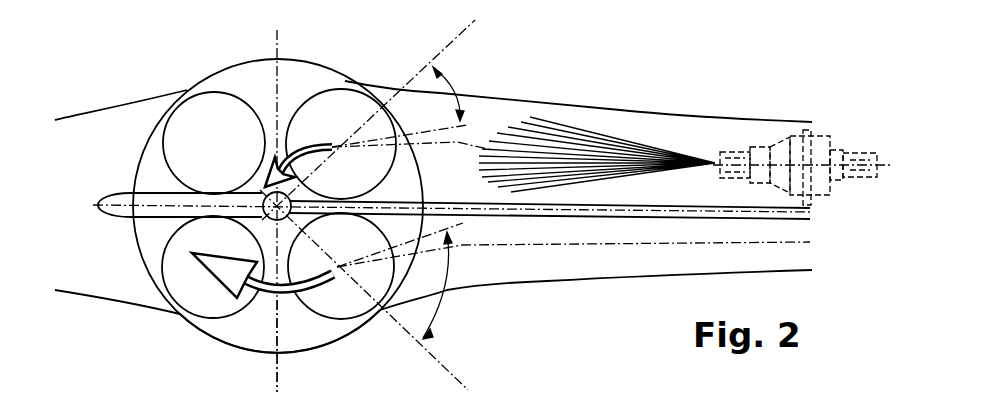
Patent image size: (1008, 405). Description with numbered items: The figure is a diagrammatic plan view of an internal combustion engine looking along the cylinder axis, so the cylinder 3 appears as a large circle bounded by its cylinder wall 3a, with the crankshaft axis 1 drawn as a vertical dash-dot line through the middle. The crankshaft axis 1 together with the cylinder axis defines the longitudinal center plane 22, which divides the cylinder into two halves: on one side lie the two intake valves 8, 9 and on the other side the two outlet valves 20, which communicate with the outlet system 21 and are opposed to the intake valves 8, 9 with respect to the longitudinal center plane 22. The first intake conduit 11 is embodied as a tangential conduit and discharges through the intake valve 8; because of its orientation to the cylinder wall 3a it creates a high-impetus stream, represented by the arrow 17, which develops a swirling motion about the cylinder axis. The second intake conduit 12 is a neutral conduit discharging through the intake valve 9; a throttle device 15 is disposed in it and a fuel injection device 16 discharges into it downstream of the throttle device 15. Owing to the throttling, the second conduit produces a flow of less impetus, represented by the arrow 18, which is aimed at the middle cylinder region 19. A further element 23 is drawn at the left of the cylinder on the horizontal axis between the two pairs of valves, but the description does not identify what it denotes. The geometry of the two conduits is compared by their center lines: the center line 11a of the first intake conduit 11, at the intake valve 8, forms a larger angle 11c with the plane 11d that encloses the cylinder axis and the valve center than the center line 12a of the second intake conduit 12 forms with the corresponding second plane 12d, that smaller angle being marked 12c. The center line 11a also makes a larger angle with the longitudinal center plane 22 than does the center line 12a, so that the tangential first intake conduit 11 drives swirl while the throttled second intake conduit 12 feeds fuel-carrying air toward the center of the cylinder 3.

The crankshaft axis 1 is at (280, 46).
The cylinder 3 is at (323, 67).
The cylinder wall 3a is at (220, 343).
The intake valve 8 is at (338, 293).
The intake valve 9 is at (347, 108).
The first intake conduit 11 is at (550, 281).
The center line of the first intake conduit 11a is at (583, 245).
The angle 11c is at (443, 307).
The plane 11d is at (452, 373).
The second intake conduit 12 is at (622, 112).
The center line of the second intake conduit 12a is at (457, 143).
The angle 12c is at (411, 105).
The second plane 12d is at (478, 29).
The throttle device 15 is at (808, 130).
The fuel injection device 16 is at (828, 147).
The arrow 17 is at (267, 295).
The arrow 18 is at (298, 151).
The middle cylinder region 19 is at (272, 203).
The outlet valves 20 is at (213, 102).
The outlet system 21 is at (93, 117).
The longitudinal center plane 22 is at (275, 367).
The splitter blade 23 is at (118, 215).